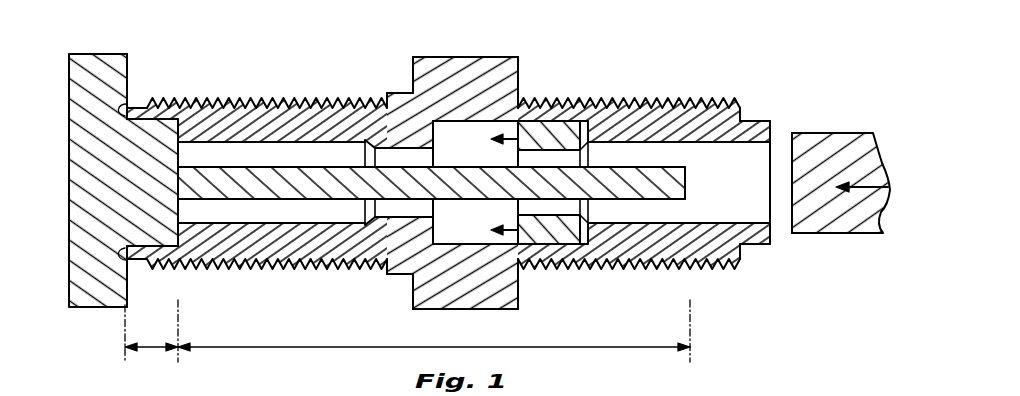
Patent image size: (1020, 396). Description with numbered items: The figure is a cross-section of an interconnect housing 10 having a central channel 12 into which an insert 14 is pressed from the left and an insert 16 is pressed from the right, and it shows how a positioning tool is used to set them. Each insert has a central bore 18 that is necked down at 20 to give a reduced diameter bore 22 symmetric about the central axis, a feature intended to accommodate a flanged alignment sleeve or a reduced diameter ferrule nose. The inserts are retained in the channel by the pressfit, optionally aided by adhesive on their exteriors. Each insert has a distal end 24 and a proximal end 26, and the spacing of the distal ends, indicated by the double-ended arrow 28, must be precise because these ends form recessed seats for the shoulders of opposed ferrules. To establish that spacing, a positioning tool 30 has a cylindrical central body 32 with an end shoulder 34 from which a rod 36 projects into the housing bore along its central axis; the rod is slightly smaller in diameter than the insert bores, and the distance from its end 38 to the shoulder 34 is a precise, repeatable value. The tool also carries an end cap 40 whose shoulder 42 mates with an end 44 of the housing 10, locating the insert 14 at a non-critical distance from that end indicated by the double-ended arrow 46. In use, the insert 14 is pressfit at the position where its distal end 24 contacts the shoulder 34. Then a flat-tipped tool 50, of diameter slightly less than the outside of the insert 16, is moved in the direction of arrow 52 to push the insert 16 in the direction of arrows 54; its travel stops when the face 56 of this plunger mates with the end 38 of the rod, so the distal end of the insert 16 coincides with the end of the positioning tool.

The housing 10 is at (532, 68).
The central channel 12 is at (461, 221).
The insert 14 is at (271, 112).
The insert 16 is at (622, 112).
The central bore 18 is at (747, 196).
The necked-down portion 20 is at (582, 214).
The reduced diameter bore 22 is at (372, 153).
The distal end 24 is at (171, 117).
The proximal end 26 is at (512, 143).
The double-ended arrow 28 is at (400, 347).
The positioning tool 30 is at (58, 304).
The cylindrical central body 32 is at (117, 160).
The shoulder 34 is at (180, 152).
The rod 36 is at (282, 167).
The end of rod 38 is at (687, 170).
The end cap 40 is at (86, 216).
The shoulder 42 is at (127, 58).
The end of housing 44 is at (128, 100).
The double-ended arrow 46 is at (150, 348).
The flat-tipped tool 50 is at (826, 146).
The arrow 52 is at (862, 196).
The arrows 54 is at (508, 135).
The face of plunger 56 is at (793, 216).